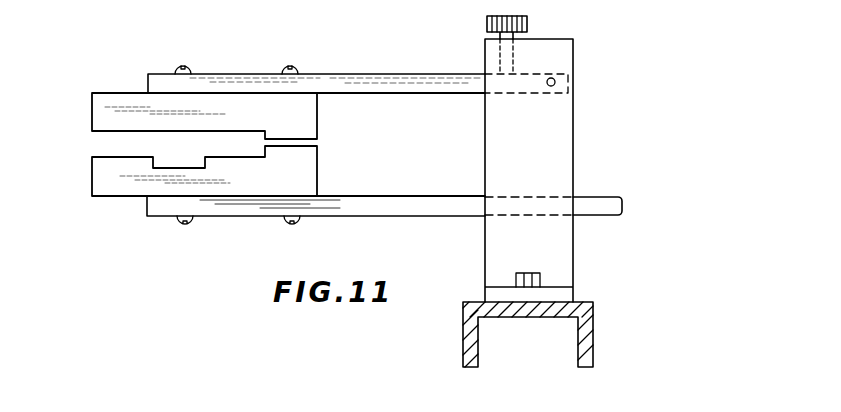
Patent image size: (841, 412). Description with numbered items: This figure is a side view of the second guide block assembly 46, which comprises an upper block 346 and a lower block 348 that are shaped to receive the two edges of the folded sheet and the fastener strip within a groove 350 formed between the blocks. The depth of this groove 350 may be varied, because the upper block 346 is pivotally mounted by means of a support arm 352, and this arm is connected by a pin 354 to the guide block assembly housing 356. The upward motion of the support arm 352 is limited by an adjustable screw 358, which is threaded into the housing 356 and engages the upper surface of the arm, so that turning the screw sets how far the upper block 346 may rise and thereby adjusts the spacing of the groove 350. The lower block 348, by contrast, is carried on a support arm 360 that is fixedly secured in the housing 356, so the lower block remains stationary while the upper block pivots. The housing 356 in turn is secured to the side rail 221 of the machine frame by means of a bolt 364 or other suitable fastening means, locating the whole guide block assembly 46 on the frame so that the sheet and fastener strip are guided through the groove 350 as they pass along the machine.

The second guide block assembly 46 is at (455, 43).
The side rail 221 is at (593, 328).
The upper block 346 is at (118, 103).
The lower block 348 is at (117, 184).
The groove 350 is at (104, 145).
The support arm 352 is at (370, 84).
The pin 354 is at (555, 82).
The guide block assembly housing 356 is at (558, 142).
The adjustable screw 358 is at (527, 22).
The support arm 360 is at (375, 205).
The bolt 364 is at (529, 273).